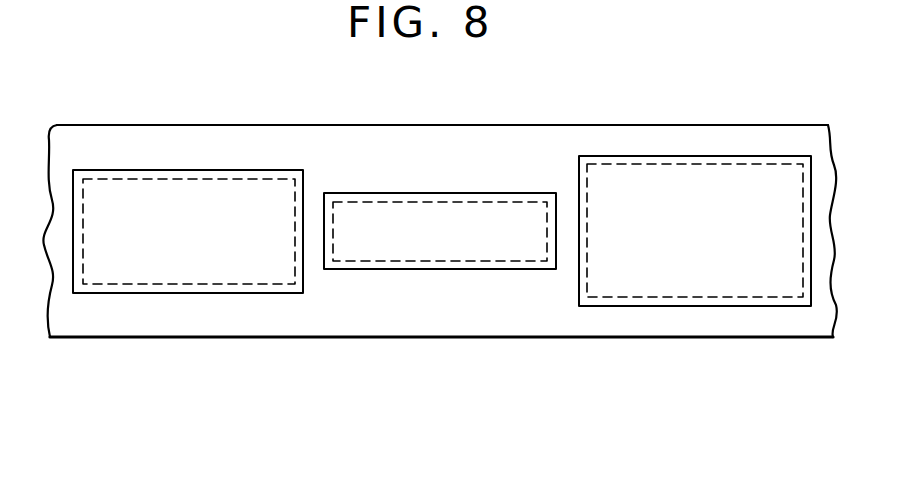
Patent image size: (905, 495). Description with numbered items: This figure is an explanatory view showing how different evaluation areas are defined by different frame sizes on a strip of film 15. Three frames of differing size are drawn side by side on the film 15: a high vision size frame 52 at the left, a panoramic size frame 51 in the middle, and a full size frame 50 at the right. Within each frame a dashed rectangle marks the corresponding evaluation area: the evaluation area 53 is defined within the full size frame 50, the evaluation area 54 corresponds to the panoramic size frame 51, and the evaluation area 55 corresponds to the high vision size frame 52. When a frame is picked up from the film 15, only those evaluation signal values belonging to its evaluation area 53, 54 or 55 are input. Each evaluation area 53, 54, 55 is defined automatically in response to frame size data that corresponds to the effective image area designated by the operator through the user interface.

The film 15 is at (732, 125).
The full size frame 50 is at (760, 306).
The panoramic size frame 51 is at (485, 269).
The high vision size frame 52 is at (232, 293).
The evaluation area 53 is at (657, 297).
The evaluation area 54 is at (407, 261).
The evaluation area 55 is at (140, 285).